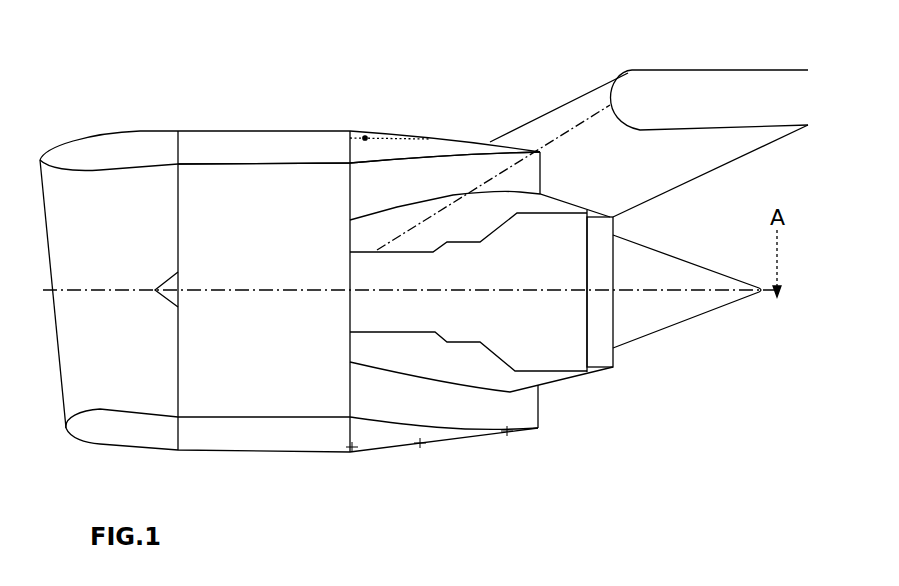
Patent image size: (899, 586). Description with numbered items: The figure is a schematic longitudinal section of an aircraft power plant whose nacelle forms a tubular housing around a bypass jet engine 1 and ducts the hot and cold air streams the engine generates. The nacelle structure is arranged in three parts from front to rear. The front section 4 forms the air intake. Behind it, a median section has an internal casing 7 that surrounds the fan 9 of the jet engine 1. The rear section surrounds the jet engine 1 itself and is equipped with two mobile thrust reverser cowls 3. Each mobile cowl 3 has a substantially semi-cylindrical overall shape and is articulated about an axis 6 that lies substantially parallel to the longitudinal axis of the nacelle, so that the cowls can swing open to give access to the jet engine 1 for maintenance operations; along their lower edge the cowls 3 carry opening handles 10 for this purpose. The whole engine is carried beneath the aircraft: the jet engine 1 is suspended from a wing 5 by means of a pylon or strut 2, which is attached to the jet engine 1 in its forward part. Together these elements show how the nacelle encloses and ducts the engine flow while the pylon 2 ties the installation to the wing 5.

The bypass jet engine 1 is at (543, 335).
The pylon or strut 2 is at (572, 117).
The mobile thrust reverser cowls 3 is at (393, 152).
The front section 4 is at (125, 135).
The wing 5 is at (715, 98).
The axis 6 is at (360, 124).
The internal casing 7 is at (222, 158).
The fan 9 is at (169, 285).
The opening handles 10 is at (425, 452).